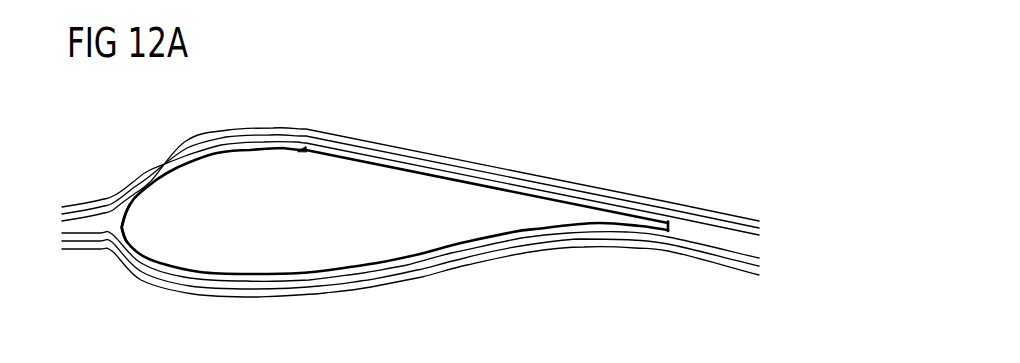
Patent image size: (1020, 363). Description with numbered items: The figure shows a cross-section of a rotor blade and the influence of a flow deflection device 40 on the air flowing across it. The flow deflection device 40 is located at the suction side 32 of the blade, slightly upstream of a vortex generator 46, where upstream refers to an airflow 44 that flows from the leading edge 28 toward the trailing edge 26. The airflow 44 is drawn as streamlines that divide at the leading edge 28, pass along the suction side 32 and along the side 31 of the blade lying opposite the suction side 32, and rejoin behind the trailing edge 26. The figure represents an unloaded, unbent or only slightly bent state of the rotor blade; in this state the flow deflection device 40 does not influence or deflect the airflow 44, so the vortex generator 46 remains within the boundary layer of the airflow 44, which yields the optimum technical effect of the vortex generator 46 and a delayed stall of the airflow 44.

The trailing edge 26 is at (669, 226).
The leading edge 28 is at (121, 226).
The pressure side surface 31 is at (378, 263).
The suction side 32 is at (405, 165).
The flow deflection device 40 is at (247, 150).
The airflow 44 is at (490, 167).
The vortex generator 46 is at (307, 147).